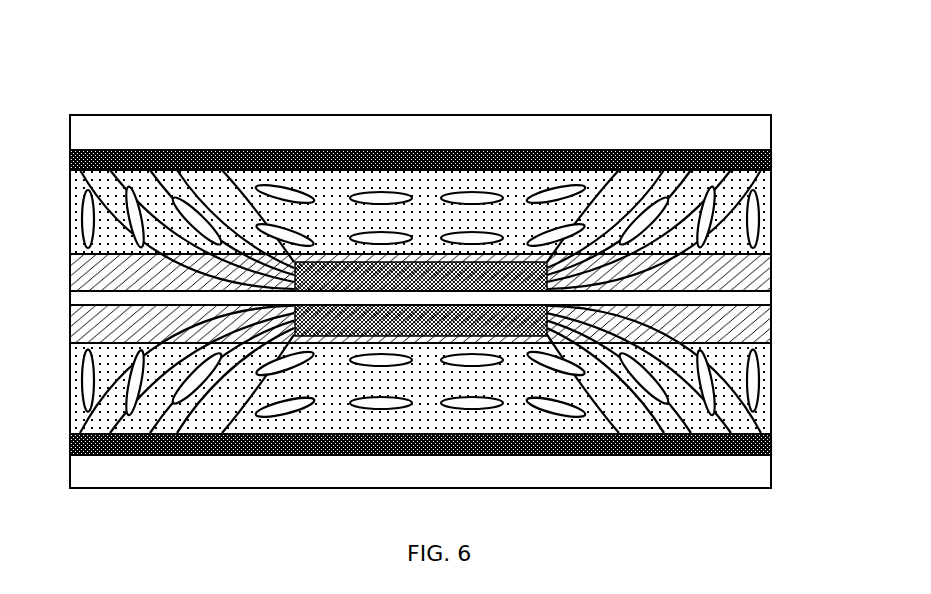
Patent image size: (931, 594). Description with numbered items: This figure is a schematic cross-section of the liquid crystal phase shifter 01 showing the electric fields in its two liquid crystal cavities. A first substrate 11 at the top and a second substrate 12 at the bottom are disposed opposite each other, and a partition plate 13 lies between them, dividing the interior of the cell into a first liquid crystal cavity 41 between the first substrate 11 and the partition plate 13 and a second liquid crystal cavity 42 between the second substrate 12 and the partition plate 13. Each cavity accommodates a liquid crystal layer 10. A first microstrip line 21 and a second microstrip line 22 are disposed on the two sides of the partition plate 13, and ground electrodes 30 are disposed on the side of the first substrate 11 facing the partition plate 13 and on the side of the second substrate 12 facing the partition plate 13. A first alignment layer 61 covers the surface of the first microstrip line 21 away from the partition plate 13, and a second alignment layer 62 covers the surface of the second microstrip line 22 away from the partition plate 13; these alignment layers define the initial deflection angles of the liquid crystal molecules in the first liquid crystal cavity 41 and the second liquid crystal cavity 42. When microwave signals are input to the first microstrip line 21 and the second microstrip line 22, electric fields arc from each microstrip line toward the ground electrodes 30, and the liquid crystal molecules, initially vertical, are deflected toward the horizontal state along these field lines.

The liquid crystal phase shifter 01 is at (102, 50).
The liquid crystal layer 10 is at (758, 222).
The first substrate 11 is at (758, 128).
The second substrate 12 is at (760, 470).
The partition plate 13 is at (760, 297).
The first microstrip line 21 is at (421, 276).
The second microstrip line 22 is at (421, 320).
The ground electrode 30 is at (771, 163).
The first liquid crystal cavity 41 is at (66, 170).
The second liquid crystal cavity 42 is at (66, 345).
The first alignment layer 61 is at (771, 275).
The second alignment layer 62 is at (771, 328).